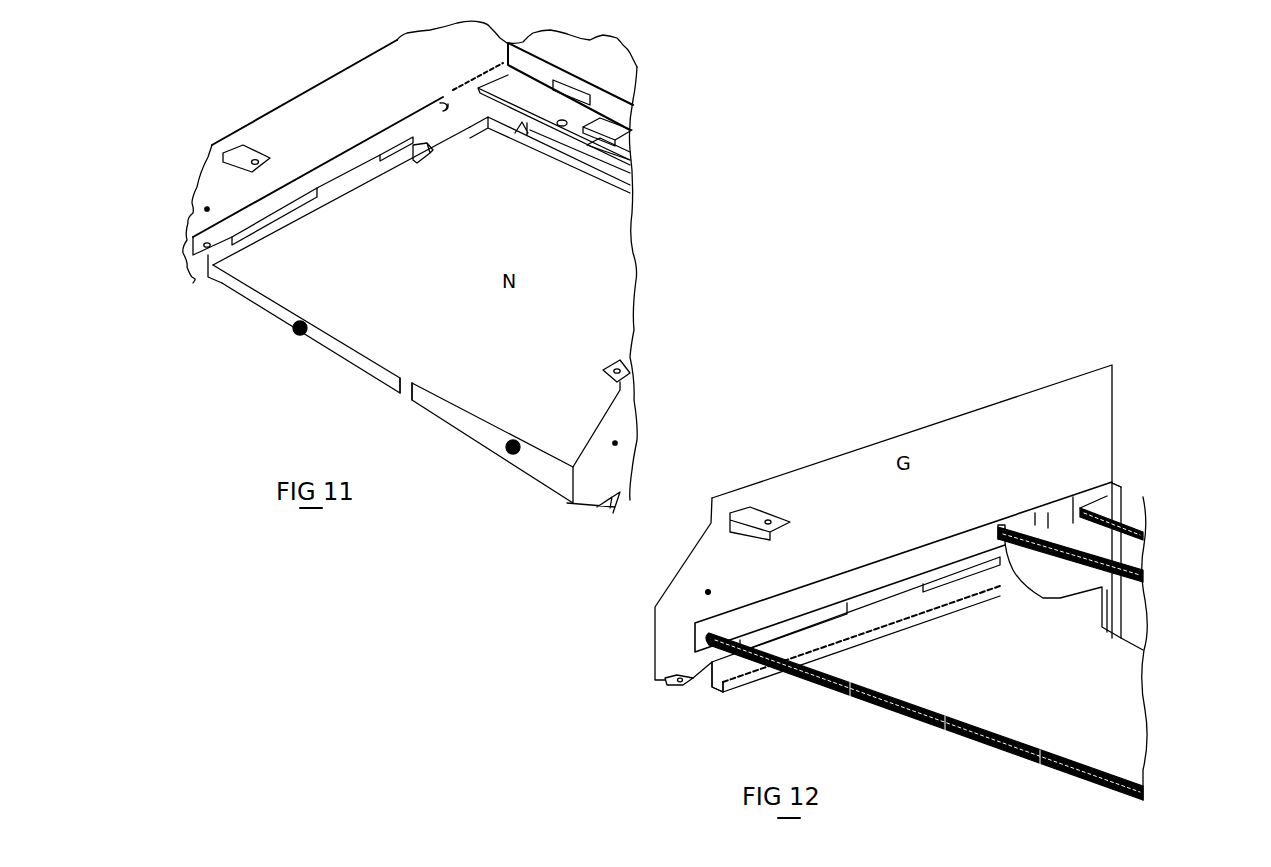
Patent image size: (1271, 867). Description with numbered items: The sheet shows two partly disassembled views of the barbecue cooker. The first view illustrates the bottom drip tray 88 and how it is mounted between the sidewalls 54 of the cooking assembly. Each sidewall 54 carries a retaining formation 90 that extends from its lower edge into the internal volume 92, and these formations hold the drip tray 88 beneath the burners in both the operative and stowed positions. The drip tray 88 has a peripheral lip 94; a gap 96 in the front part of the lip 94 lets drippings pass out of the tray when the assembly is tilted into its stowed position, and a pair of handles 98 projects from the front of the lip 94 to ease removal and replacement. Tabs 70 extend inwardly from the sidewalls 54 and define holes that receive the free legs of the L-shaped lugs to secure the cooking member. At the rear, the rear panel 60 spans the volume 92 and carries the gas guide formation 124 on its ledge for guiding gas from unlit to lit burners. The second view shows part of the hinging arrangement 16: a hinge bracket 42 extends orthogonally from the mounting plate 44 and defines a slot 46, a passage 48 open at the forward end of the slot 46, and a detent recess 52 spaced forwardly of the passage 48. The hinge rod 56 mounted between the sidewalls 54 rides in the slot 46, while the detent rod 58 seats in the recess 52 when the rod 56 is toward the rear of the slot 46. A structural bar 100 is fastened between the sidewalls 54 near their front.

In FIG. 12, the hinging arrangement 16 is at (1132, 461).
In FIG. 12, the hinge bracket 42 is at (1034, 520).
In FIG. 12, the mounting plate 44 is at (1143, 500).
In FIG. 12, the slot 46 is at (1097, 503).
In FIG. 12, the passage 48 is at (1070, 487).
In FIG. 12, the detent recess 52 is at (1008, 517).
In FIG. 11, the sidewall 54 is at (265, 113).
In FIG. 12, the sidewall 54 is at (950, 413).
In FIG. 12, the hinge pin or rod 56 is at (1145, 530).
In FIG. 12, the detent pin or rod 58 is at (1145, 580).
In FIG. 11, the rear panel 60 is at (630, 110).
In FIG. 11, the tab 70 is at (247, 148).
In FIG. 12, the tab 70 is at (765, 513).
In FIG. 11, the bottom drip tray 88 is at (257, 305).
In FIG. 12, the retaining formation 90 is at (732, 694).
In FIG. 11, the internal volume 92 is at (583, 224).
In FIG. 11, the peripheral lip 94 is at (475, 423).
In FIG. 11, the gap 96 is at (400, 395).
In FIG. 11, the handle 98 is at (297, 337).
In FIG. 12, the structural bar 100 is at (1110, 772).
In FIG. 11, the gas guide formation or structure 124 is at (630, 145).